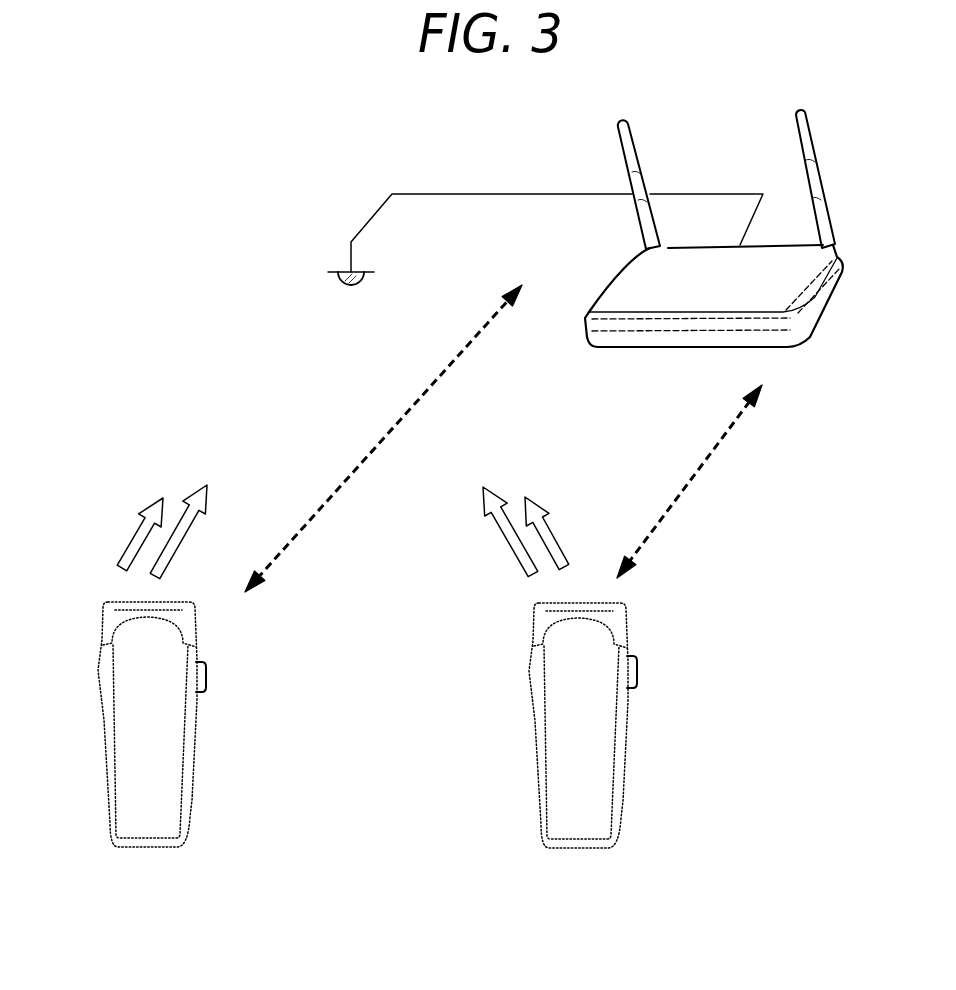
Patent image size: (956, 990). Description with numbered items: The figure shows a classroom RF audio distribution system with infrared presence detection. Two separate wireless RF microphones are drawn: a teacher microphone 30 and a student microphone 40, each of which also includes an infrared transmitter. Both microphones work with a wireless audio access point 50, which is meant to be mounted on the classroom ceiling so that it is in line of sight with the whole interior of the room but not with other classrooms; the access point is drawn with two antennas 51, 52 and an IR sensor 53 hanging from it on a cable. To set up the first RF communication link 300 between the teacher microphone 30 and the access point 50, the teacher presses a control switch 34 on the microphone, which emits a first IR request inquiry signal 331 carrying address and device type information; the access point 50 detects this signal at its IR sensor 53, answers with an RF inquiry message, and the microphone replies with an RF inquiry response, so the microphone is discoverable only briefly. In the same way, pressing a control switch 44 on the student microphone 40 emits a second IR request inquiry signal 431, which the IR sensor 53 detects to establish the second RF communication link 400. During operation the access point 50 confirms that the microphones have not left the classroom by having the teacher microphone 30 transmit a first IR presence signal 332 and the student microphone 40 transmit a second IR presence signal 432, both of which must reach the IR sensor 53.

The teacher microphone 30 is at (166, 826).
The control switch 34 is at (207, 672).
The student microphone 40 is at (594, 827).
The control switch 44 is at (638, 667).
The wireless audio access point 50 is at (733, 298).
The first antenna 51 is at (617, 132).
The second antenna 52 is at (795, 120).
The IR sensor 53 is at (328, 271).
The first RF communication link 300 is at (404, 413).
The second RF communication link 400 is at (700, 469).
The first IR request inquiry signal 331 is at (191, 531).
The first IR presence signal 332 is at (131, 539).
The second IR request inquiry signal 431 is at (509, 547).
The second IR presence signal 432 is at (558, 540).